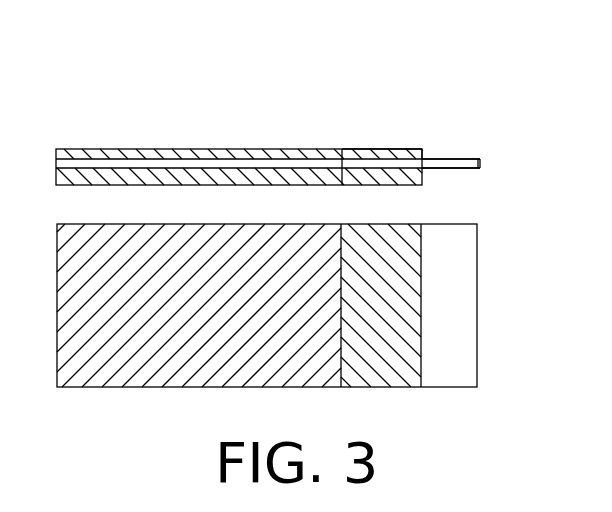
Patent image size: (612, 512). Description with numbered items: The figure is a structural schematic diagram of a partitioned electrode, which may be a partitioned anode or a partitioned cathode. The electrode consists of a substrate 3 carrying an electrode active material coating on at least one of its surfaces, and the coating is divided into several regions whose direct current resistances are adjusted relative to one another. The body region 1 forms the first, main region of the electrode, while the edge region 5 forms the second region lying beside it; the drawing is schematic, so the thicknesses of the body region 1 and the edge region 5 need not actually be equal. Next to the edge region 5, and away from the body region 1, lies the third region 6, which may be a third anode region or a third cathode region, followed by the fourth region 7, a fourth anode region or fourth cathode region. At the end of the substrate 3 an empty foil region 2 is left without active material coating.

The body region 1 is at (139, 149).
The empty foil region 2 is at (447, 159).
The substrate 3 is at (480, 165).
The edge region 5 is at (360, 149).
The third region 6 is at (383, 149).
The fourth region 7 is at (411, 149).